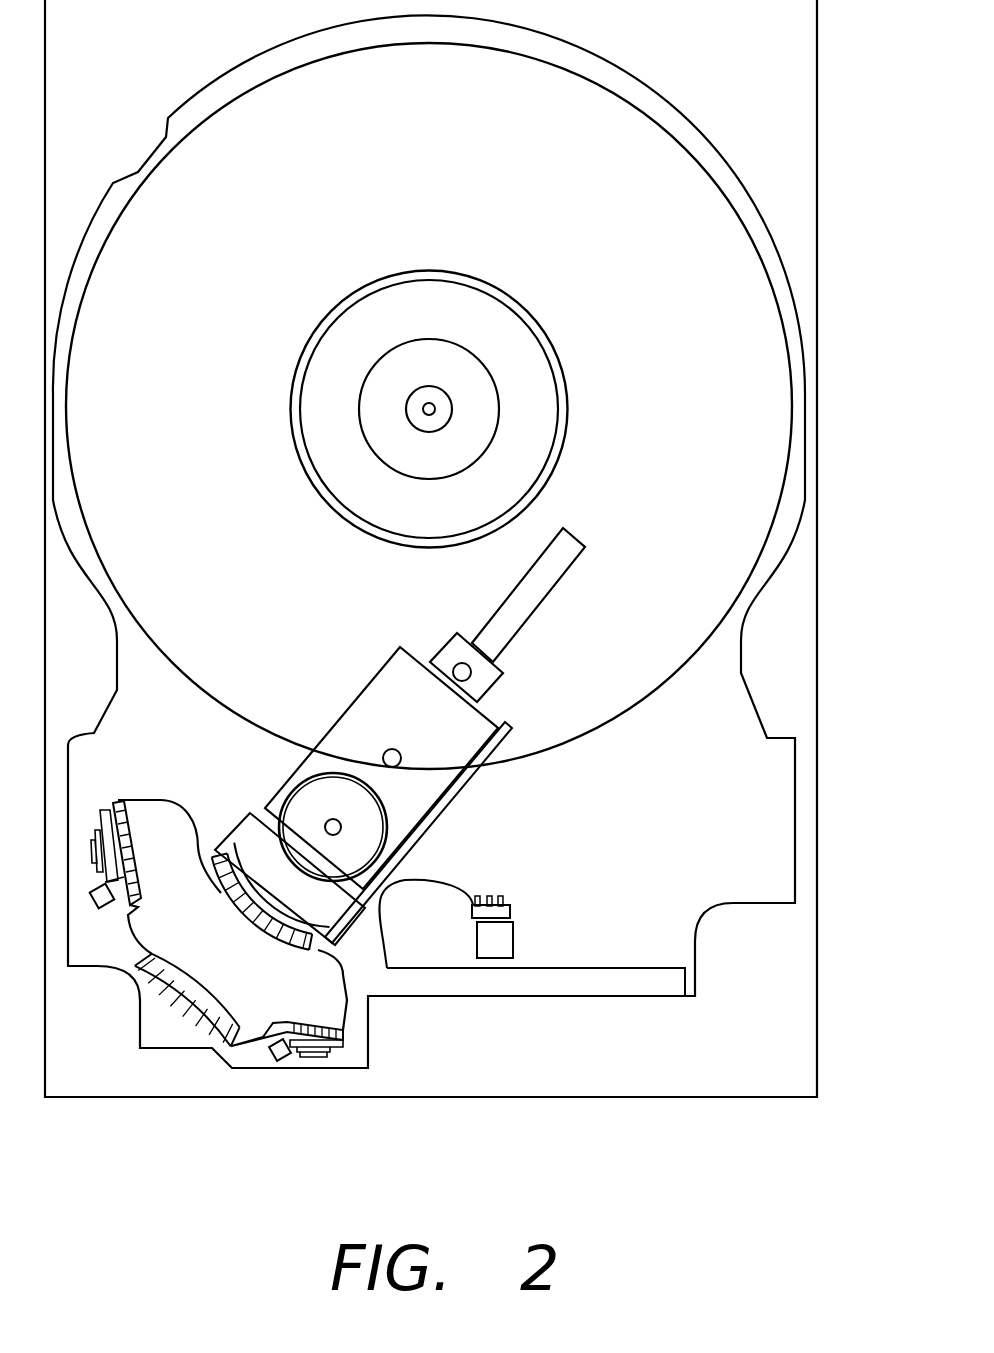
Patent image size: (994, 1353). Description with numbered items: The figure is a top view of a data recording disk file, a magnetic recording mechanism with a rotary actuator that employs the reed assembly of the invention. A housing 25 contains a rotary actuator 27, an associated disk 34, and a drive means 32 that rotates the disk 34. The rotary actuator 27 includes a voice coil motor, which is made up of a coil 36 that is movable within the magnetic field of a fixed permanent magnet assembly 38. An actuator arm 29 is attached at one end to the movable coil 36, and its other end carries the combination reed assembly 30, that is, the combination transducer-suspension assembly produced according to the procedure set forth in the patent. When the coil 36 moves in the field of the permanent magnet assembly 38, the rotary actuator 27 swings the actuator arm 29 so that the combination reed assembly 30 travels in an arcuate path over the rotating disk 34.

The housing 25 is at (803, 840).
The rotary actuator 27 is at (445, 851).
The actuator arm 29 is at (440, 783).
The combination reed assembly 30 is at (590, 578).
The drive means 32 is at (373, 513).
The disk 34 is at (760, 320).
The coil 36 is at (208, 1018).
The permanent magnet assembly 38 is at (200, 980).